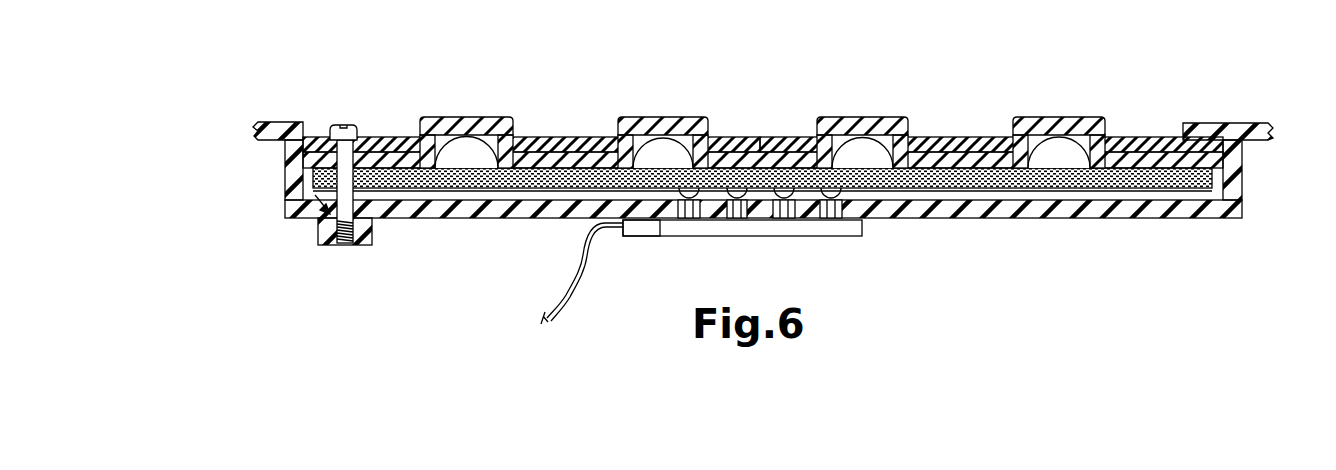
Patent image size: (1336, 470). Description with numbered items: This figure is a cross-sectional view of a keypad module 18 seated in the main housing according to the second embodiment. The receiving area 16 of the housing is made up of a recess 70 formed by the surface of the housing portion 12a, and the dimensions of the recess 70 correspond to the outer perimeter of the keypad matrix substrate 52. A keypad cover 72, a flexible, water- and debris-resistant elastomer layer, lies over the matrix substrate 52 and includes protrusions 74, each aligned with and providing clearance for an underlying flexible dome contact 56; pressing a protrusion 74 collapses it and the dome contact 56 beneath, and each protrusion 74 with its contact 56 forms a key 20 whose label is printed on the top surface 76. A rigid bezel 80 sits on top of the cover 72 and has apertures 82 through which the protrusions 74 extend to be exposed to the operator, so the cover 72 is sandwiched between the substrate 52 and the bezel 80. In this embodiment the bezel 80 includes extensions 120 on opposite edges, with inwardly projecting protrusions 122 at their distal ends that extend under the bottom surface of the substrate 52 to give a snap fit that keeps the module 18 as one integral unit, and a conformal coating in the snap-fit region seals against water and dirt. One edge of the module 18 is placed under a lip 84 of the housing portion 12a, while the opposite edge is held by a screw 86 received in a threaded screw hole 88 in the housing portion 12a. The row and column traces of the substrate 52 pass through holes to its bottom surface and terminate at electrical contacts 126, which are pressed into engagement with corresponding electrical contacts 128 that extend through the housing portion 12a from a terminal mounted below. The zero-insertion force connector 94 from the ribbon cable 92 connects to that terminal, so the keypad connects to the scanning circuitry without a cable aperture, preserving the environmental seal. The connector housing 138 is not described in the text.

The housing portion 12a is at (278, 125).
The receiving area 16 is at (239, 222).
The keypad module 18 is at (744, 76).
The key 20 is at (422, 98).
The keypad matrix substrate 52 is at (1128, 178).
The flexible dome contact 56 is at (1033, 127).
The recess 70 is at (1264, 166).
The keypad cover 72 is at (572, 137).
The protrusion 74 is at (513, 116).
The top surface 76 is at (650, 117).
The bezel 80 is at (1145, 144).
The aperture 82 is at (1008, 129).
The lip 84 is at (1207, 128).
The screw 86 is at (350, 125).
The threaded screw hole 88 is at (306, 247).
The ribbon cable 92 is at (582, 280).
The zero-insertion force connector 94 is at (632, 237).
The extension 120 is at (318, 162).
The inwardly projecting protrusion 122 is at (313, 238).
The electrical contact 126 is at (846, 196).
The electrical contact 128 is at (831, 210).
The connector housing 138 is at (727, 237).